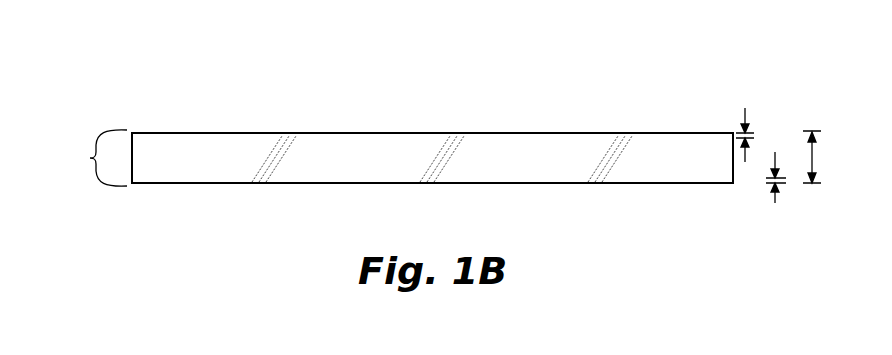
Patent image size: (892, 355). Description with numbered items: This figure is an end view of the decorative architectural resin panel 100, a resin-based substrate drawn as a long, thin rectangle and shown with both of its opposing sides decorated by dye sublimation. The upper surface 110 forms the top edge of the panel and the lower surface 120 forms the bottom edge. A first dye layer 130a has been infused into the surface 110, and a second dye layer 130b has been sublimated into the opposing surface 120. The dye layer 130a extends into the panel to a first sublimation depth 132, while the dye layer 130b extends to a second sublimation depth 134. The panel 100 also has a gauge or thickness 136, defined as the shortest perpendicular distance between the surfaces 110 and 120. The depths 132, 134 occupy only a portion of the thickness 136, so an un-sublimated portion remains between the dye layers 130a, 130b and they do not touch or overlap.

The decorative architectural resin panel 100 is at (89, 158).
The surface 110 is at (172, 133).
The opposing surface 120 is at (172, 183).
The first dye layer 130a is at (540, 133).
The second dye layer 130b is at (642, 183).
The first sublimation depth 132 is at (747, 124).
The second sublimation depth 134 is at (777, 191).
The gauge/thickness 136 is at (835, 157).